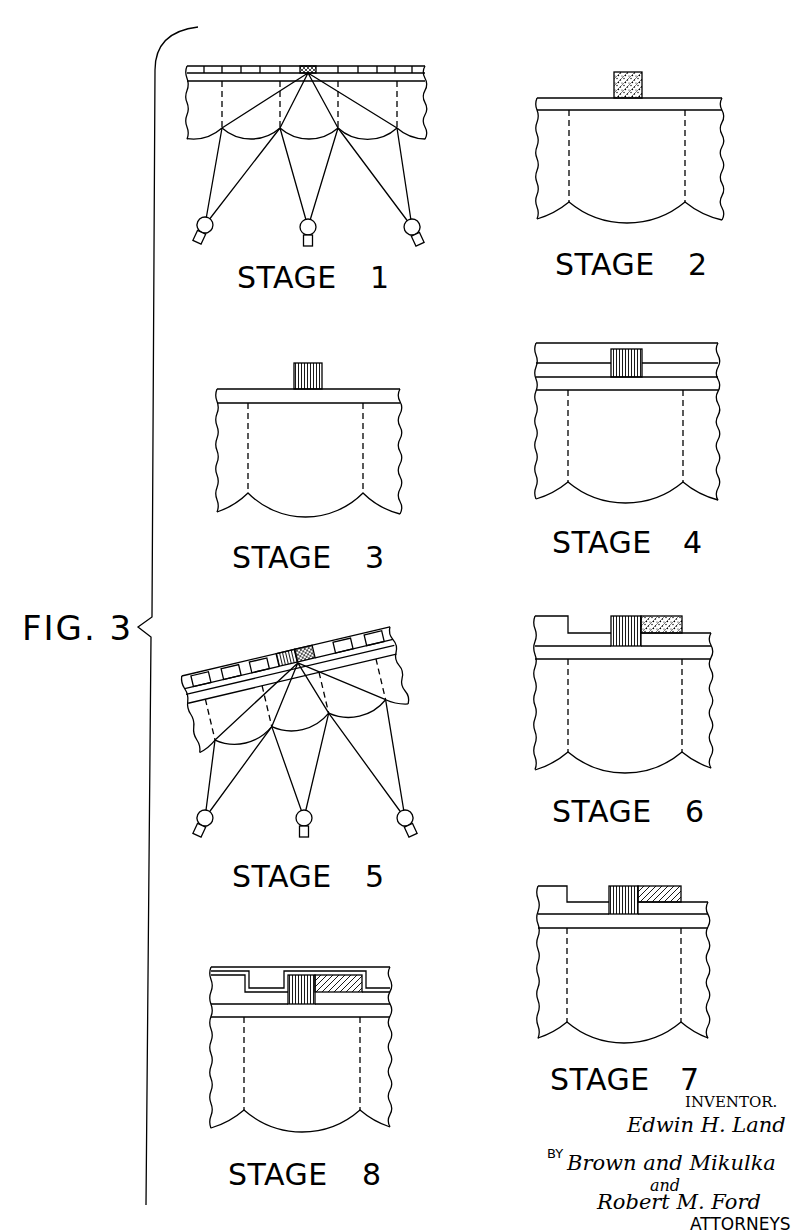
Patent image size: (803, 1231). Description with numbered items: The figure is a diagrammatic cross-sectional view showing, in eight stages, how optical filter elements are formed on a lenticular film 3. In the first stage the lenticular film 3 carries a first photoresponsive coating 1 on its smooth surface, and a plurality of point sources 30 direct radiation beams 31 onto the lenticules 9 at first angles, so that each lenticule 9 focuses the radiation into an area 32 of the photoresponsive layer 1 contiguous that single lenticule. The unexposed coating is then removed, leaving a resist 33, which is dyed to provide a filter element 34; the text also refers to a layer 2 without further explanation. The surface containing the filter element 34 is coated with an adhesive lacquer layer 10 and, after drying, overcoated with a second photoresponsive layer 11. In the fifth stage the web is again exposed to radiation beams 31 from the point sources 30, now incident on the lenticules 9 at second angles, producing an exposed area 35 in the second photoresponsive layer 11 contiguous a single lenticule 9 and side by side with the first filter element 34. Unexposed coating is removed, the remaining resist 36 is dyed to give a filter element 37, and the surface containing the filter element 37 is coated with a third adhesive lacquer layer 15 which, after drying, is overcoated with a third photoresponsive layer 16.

The first photoresponsive coating 1 is at (425, 67).
The photosensitive layer 2 is at (418, 79).
The lenticular film 3 is at (427, 128).
The lenticules 9 is at (228, 92).
The adhesive lacquer layer 10 is at (710, 372).
The second photoresponsive layer 11 is at (718, 352).
The third adhesive lacquer layer 15 is at (390, 985).
The third photoresponsive layer 16 is at (388, 975).
The point sources 30 is at (213, 226).
The radiation beams 31 is at (232, 190).
The area 32 is at (308, 66).
The resist 33 is at (625, 72).
The filter element 34 is at (306, 363).
The exposed area 35 is at (303, 647).
The resist 36 is at (660, 616).
The filter element 37 is at (660, 886).